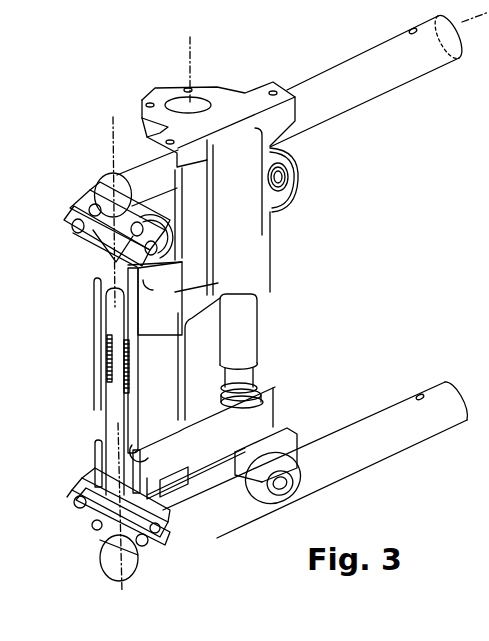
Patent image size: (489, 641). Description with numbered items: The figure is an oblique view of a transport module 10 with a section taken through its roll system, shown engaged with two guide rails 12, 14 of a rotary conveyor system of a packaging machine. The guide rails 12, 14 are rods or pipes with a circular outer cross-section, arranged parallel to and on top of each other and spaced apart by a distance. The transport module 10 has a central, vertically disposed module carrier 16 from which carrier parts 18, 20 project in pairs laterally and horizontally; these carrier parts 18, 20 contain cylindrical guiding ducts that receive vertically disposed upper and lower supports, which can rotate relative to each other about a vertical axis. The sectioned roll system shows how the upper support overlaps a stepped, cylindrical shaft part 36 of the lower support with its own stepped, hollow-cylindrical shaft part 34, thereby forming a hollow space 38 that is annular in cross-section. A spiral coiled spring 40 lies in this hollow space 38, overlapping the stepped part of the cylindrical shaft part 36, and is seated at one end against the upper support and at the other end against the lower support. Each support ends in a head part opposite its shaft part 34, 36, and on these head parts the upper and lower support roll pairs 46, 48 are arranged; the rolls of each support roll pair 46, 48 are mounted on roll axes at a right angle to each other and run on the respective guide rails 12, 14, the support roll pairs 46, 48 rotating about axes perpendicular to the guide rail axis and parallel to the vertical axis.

The transport module 10 is at (104, 130).
The guide rail 12 is at (385, 67).
The guide rail 14 is at (395, 433).
The module carrier 16 is at (198, 348).
The carrier part 18 is at (162, 302).
The carrier part 20 is at (152, 470).
The hollow-cylindrical shaft part 34 is at (105, 316).
The cylindrical shaft part 36 is at (115, 405).
The hollow space 38 is at (110, 360).
The spiral coiled spring 40 is at (86, 370).
The upper support roll pair 46 is at (147, 215).
The lower support roll pair 48 is at (143, 550).